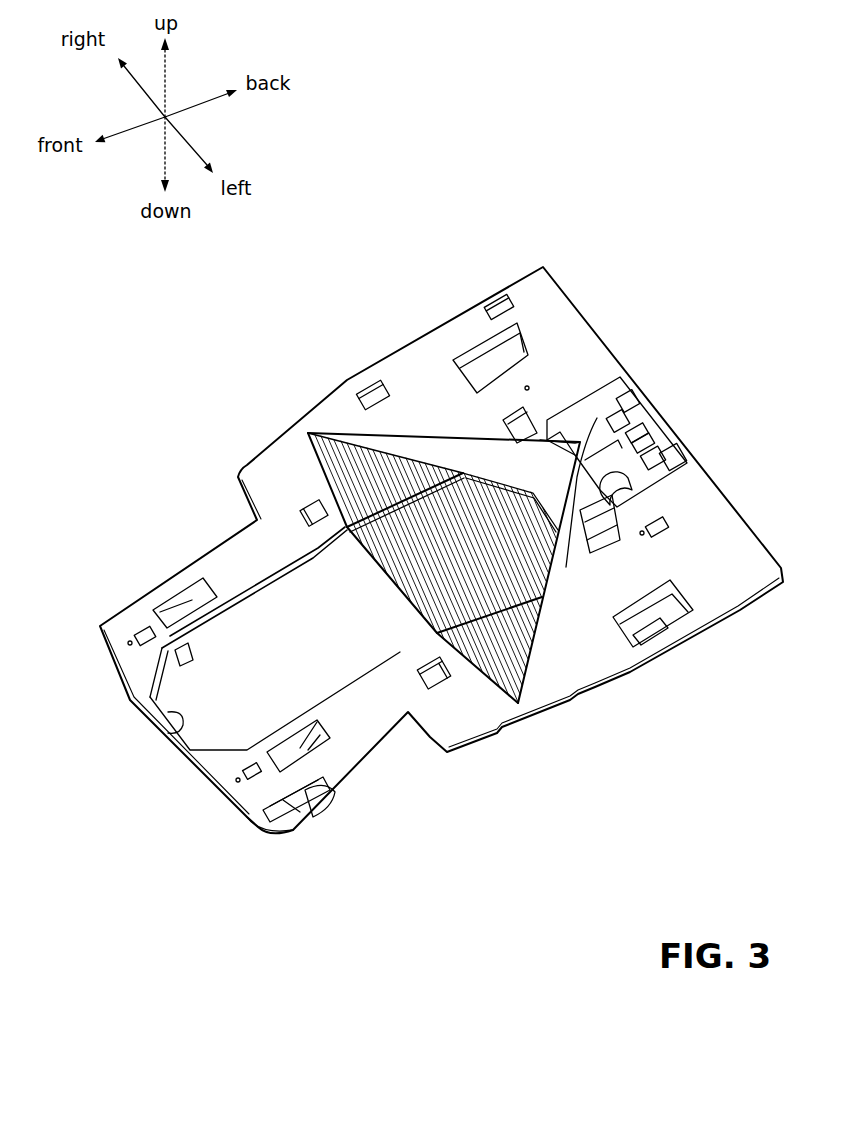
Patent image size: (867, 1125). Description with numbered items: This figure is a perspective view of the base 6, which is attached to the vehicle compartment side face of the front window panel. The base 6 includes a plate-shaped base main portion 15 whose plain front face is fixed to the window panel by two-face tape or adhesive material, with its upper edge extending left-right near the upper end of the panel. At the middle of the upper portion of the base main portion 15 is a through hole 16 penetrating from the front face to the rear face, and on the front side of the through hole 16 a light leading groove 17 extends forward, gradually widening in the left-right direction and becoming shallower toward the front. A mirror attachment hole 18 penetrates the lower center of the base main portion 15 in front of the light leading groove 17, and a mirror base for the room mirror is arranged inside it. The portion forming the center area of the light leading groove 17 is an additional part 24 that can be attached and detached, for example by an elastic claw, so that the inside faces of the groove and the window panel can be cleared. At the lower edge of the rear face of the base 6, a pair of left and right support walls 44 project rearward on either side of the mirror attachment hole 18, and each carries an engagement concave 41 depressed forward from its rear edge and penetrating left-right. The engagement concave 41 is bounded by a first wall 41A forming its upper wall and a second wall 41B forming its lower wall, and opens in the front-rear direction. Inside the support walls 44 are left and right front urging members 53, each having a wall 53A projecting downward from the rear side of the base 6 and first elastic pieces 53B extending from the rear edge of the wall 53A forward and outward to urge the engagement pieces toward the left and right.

The base 6 is at (412, 547).
The base main portion 15 is at (720, 515).
The through hole 16 is at (627, 423).
The light leading groove 17 is at (443, 453).
The mirror attachment hole 18 is at (172, 714).
The additional part 24 is at (413, 563).
The engagement concave 41 is at (278, 840).
The first wall 41A is at (283, 800).
The second wall 41B is at (313, 817).
The support wall 44 is at (245, 817).
The front urging member 53 is at (232, 657).
The wall 53A is at (168, 678).
The first elastic piece 53B is at (170, 613).